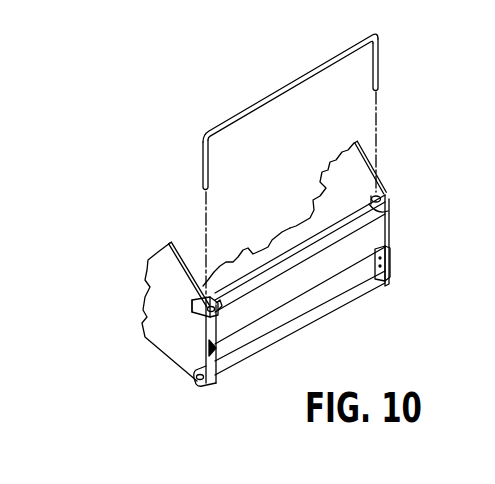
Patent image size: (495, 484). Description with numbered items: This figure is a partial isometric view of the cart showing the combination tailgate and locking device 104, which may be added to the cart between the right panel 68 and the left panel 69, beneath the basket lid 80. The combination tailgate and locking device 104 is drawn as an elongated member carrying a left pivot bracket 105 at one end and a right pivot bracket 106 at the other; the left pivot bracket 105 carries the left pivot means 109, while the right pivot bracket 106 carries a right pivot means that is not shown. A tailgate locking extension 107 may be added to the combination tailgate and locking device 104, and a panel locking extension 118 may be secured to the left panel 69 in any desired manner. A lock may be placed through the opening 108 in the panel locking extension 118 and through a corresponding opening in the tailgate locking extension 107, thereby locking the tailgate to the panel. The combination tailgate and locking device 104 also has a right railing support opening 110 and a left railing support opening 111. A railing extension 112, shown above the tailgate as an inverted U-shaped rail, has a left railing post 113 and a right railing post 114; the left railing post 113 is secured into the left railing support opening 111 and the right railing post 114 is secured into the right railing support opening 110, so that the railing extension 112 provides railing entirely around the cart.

The right panel 68 is at (328, 192).
The left panel 69 is at (158, 352).
The basket lid 80 is at (268, 245).
The combination tailgate and locking device 104 is at (337, 290).
The left pivot bracket 105 is at (215, 377).
The right pivot bracket 106 is at (398, 268).
The tailgate locking extension 107 is at (222, 317).
The opening 108 is at (203, 317).
The left pivot means 109 is at (203, 382).
The right railing support opening 110 is at (389, 214).
The left railing support opening 111 is at (232, 278).
The railing extension 112 is at (248, 100).
The left railing post 113 is at (202, 165).
The right railing post 114 is at (381, 72).
The panel locking extension 118 is at (193, 308).